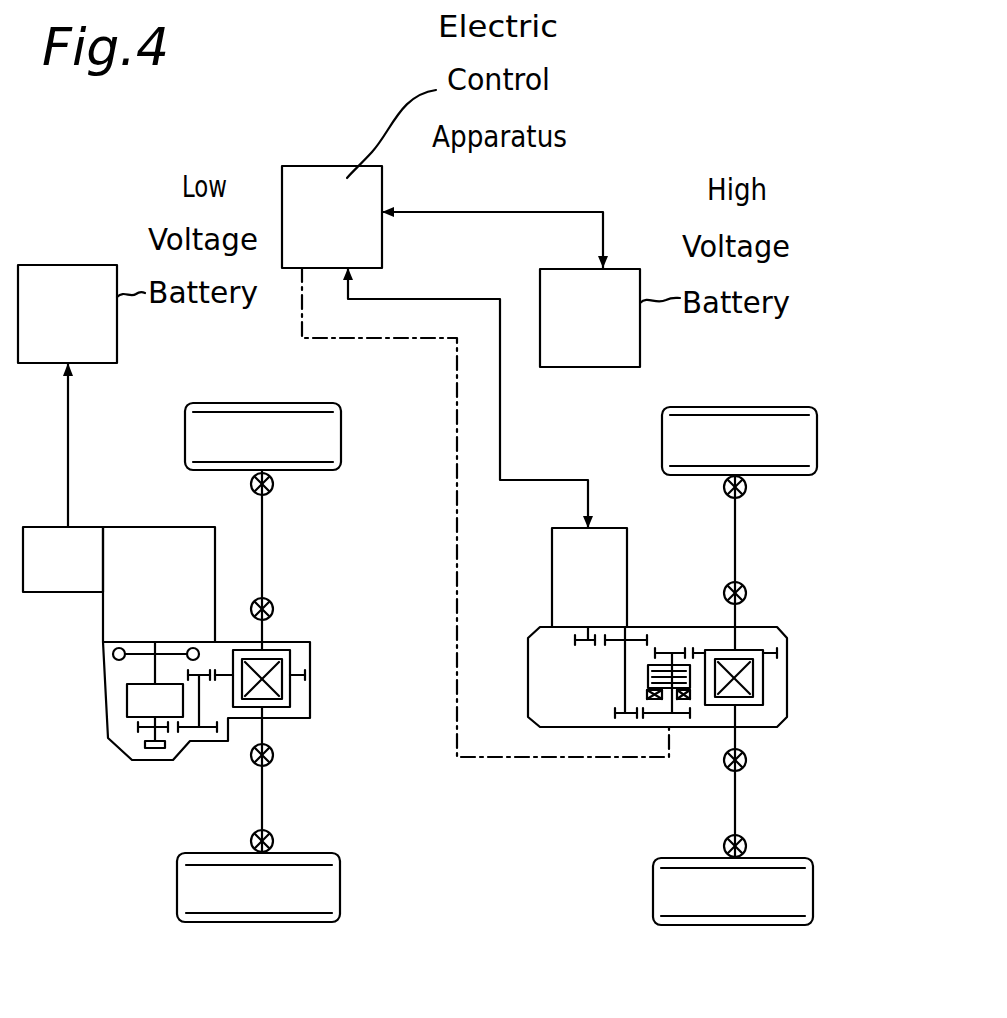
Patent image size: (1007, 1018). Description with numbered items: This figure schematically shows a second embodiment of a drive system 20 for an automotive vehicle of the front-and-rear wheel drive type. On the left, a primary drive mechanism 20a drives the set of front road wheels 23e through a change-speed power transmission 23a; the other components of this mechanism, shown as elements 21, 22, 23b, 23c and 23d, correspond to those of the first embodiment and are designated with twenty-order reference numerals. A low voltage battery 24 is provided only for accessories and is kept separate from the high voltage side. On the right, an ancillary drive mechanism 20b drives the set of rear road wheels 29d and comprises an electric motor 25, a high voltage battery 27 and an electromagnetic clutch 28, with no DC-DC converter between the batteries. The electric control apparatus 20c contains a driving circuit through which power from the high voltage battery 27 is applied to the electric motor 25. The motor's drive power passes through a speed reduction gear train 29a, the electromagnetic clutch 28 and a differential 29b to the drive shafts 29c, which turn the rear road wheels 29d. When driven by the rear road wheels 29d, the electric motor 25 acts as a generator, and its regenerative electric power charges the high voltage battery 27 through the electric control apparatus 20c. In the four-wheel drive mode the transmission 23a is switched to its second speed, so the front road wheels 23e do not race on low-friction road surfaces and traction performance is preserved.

The drive system 20 is at (470, 874).
The primary drive mechanism 20a is at (110, 750).
The ancillary drive mechanism 20b is at (797, 679).
The electric control apparatus 20c is at (300, 226).
The engine 21 is at (150, 527).
The generator 22 is at (42, 527).
The power transmission 23a is at (127, 700).
The front gear train 23b is at (173, 735).
The front differential 23c is at (310, 658).
The front axle shaft 23d is at (264, 546).
The front road wheels 23e is at (262, 418).
The low voltage battery 24 is at (50, 327).
The electric motor 25 is at (552, 547).
The high voltage battery 27 is at (572, 327).
The electromagnetic clutch 28 is at (682, 720).
The speed reduction gear train 29a is at (640, 635).
The differential 29b is at (747, 643).
The drive shafts 29c is at (736, 531).
The rear road wheels 29d is at (733, 420).